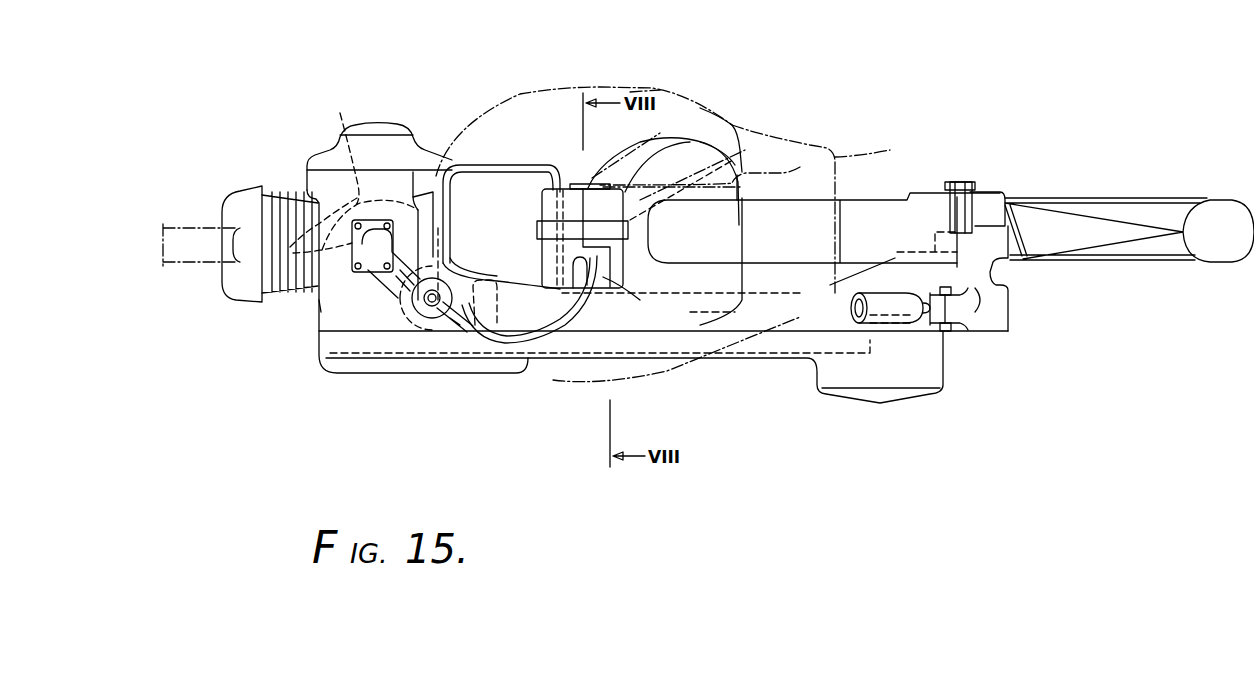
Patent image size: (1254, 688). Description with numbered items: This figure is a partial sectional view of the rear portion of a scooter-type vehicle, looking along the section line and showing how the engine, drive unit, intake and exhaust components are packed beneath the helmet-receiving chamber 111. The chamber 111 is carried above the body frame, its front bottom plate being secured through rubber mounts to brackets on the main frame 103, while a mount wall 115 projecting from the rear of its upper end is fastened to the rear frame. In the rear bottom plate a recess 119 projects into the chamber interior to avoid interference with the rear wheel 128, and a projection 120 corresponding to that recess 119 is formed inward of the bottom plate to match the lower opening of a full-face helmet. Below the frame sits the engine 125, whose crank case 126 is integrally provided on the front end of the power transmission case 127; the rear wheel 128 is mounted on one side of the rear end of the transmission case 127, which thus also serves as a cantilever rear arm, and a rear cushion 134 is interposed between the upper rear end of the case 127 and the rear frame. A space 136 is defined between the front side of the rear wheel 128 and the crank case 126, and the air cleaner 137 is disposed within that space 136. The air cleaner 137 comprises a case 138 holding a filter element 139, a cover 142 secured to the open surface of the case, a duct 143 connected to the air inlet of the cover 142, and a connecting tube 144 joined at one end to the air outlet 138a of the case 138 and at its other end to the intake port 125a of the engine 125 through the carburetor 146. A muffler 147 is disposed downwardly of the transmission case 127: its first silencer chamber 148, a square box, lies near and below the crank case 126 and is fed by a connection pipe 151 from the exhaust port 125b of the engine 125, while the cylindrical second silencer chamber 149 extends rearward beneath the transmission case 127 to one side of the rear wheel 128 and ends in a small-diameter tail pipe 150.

The main frame 103 is at (180, 226).
The helmet-receiving chamber 111 is at (655, 88).
The mount wall 115 is at (892, 150).
The recess 119 is at (800, 167).
The projection 120 is at (733, 110).
The engine 125 is at (240, 286).
The intake port 125a is at (319, 305).
The exhaust port 125b is at (298, 256).
The crank case 126 is at (405, 152).
The power transmission case 127 is at (772, 356).
The rear wheel 128 is at (1225, 215).
The rear cushion 134 is at (898, 312).
The space 136 is at (535, 266).
The air cleaner 137 is at (688, 122).
The case 138 is at (633, 270).
The air outlet 138a is at (605, 293).
The filter element 139 is at (743, 150).
The cover 142 is at (549, 200).
The duct 143 is at (590, 185).
The connecting tube 144 is at (537, 316).
The carburetor 146 is at (415, 322).
The muffler 147 is at (470, 154).
The first silencer chamber 148 is at (505, 192).
The second silencer chamber 149 is at (823, 355).
The tail pipe 150 is at (943, 333).
The connection pipe 151 is at (354, 171).